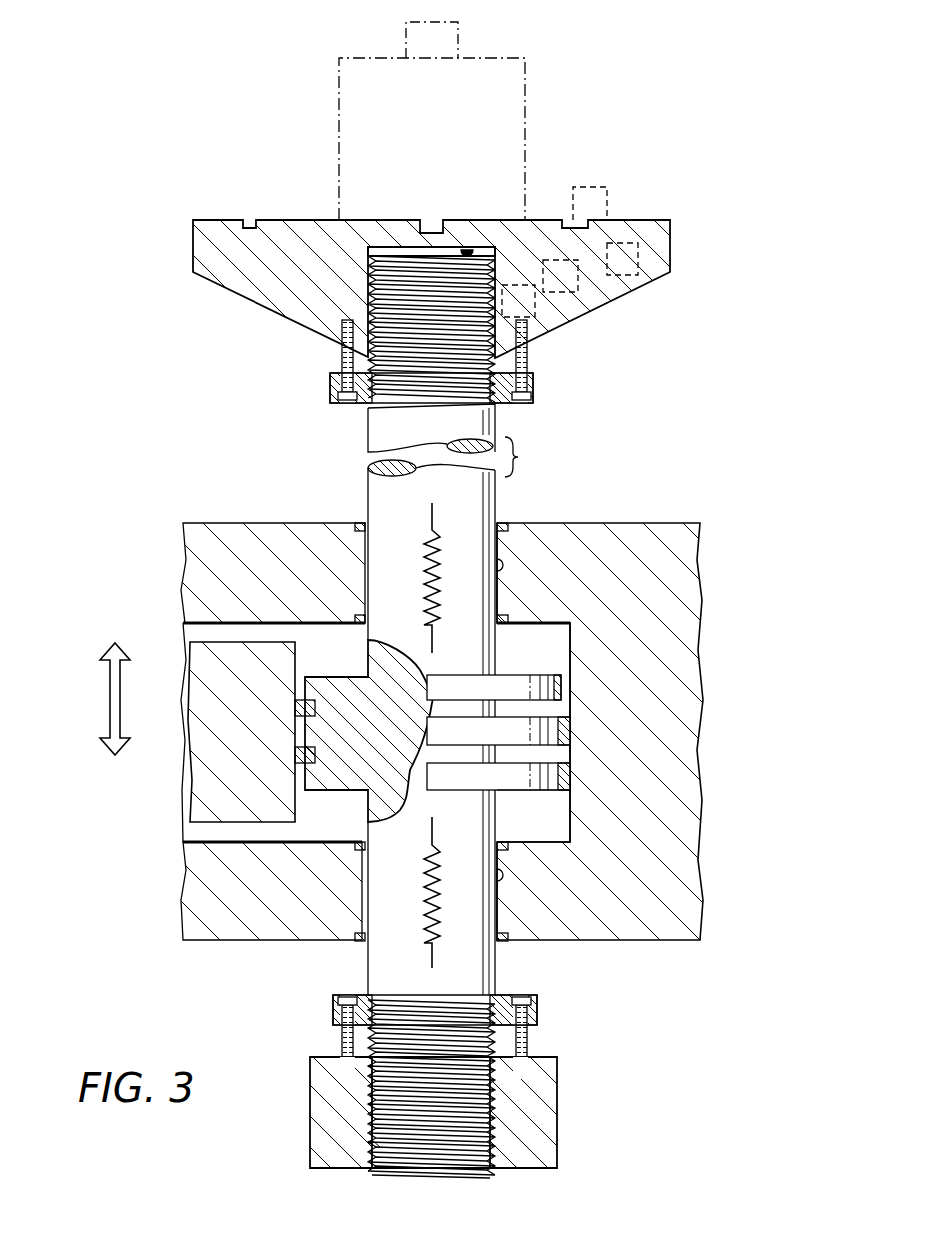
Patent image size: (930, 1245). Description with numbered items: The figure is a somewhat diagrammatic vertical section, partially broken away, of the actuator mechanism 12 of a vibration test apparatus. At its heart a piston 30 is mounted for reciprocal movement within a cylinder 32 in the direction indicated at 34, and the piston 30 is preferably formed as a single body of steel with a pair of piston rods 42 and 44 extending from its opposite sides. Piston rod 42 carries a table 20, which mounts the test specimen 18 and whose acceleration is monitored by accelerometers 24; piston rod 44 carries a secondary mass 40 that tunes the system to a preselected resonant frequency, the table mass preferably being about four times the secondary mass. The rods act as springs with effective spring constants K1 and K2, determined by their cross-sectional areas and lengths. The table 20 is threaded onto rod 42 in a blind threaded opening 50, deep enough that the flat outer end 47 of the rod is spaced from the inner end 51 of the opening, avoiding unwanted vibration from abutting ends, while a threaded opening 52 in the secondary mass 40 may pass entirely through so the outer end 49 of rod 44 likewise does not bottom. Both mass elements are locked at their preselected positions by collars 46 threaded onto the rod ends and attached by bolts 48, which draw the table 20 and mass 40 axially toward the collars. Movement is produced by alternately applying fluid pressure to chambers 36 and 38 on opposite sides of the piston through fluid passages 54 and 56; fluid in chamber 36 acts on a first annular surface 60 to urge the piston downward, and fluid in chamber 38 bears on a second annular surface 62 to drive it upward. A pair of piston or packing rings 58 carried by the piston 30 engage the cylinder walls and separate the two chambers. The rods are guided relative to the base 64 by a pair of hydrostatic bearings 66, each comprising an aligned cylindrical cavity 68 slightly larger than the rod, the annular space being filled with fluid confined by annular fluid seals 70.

The actuator mechanism 12 is at (131, 346).
The test specimen 18 is at (525, 92).
The table 20 is at (648, 220).
The accelerometers 24 is at (458, 30).
The piston 30 is at (317, 728).
The cylinder 32 is at (300, 807).
The direction of reciprocal movement 34 is at (108, 718).
The chamber 36 is at (315, 648).
The chamber 38 is at (325, 822).
The secondary mass 40 is at (558, 1114).
The piston rod 42 is at (497, 496).
The piston rod 44 is at (495, 962).
The collars 46 is at (515, 404).
The outer end of piston rod 47 is at (417, 293).
The bolts 48 is at (342, 350).
The outer end of piston rod 49 is at (453, 1177).
The blind threaded opening 50 is at (372, 275).
The inner end of opening 51 is at (473, 252).
The threaded opening 52 is at (377, 1143).
The fluid passage 54 is at (207, 627).
The fluid passage 56 is at (210, 830).
The piston or packing rings 58 is at (570, 756).
The first annular surface 60 is at (538, 676).
The second annular surface 62 is at (534, 795).
The base 64 is at (205, 545).
The hydrostatic bearings 66 is at (500, 547).
The cylindrical cavities 68 is at (500, 572).
The annular fluid seals 70 is at (360, 523).
The effective spring constant of piston rod K1 is at (413, 578).
The effective spring constant of piston rod K2 is at (414, 892).